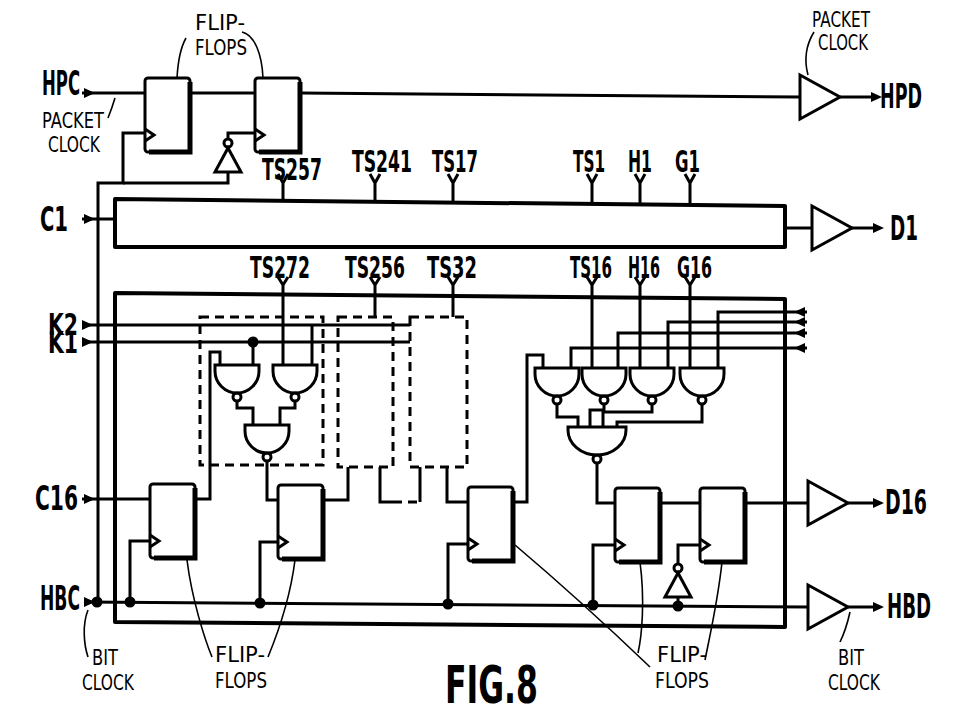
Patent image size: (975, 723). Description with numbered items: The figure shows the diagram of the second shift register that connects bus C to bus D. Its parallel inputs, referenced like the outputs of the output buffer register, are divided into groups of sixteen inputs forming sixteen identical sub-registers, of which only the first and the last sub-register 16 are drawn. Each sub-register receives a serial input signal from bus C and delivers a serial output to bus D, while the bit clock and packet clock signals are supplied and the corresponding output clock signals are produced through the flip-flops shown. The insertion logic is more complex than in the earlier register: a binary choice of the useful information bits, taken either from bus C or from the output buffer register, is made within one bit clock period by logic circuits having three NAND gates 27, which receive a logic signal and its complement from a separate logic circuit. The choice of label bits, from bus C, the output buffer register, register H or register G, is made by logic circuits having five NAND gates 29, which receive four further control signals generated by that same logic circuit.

The sub-register 16 is at (447, 523).
The logic circuits having three NAND gates 27 is at (203, 434).
The logic circuits having five NAND gates 29 is at (630, 440).